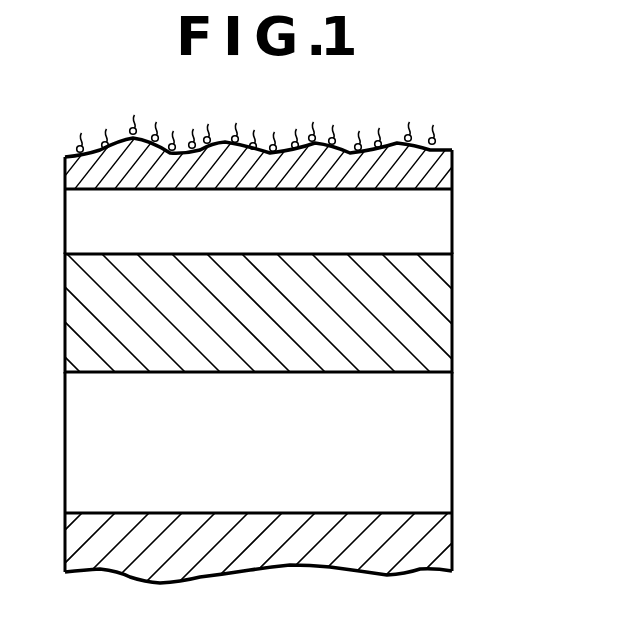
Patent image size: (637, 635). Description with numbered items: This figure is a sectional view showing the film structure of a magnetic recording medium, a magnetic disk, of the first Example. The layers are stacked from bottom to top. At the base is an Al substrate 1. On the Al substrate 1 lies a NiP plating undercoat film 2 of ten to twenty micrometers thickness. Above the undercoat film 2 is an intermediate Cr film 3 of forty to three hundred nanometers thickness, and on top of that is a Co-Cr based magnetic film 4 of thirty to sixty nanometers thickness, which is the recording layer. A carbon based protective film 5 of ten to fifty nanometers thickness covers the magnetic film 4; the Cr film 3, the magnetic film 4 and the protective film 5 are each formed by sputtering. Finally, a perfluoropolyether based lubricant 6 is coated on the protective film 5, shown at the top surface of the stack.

The Al substrate 1 is at (428, 550).
The NiP plating undercoat film 2 is at (435, 450).
The intermediate Cr film 3 is at (442, 325).
The Co-Cr based magnetic film 4 is at (438, 222).
The carbon based protective film 5 is at (445, 172).
The perfluoropolyether based lubricant 6 is at (432, 137).